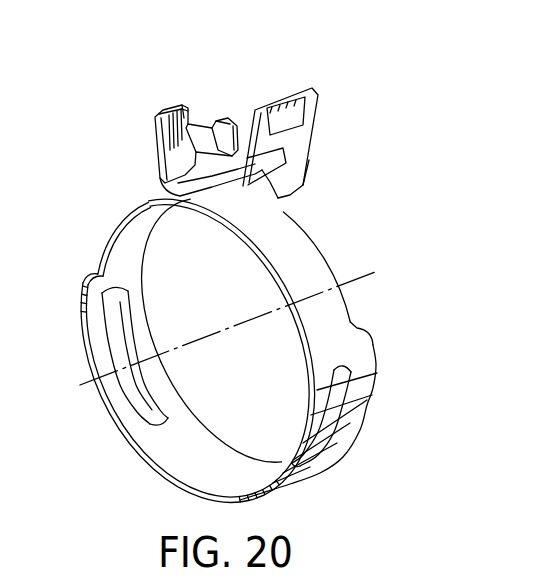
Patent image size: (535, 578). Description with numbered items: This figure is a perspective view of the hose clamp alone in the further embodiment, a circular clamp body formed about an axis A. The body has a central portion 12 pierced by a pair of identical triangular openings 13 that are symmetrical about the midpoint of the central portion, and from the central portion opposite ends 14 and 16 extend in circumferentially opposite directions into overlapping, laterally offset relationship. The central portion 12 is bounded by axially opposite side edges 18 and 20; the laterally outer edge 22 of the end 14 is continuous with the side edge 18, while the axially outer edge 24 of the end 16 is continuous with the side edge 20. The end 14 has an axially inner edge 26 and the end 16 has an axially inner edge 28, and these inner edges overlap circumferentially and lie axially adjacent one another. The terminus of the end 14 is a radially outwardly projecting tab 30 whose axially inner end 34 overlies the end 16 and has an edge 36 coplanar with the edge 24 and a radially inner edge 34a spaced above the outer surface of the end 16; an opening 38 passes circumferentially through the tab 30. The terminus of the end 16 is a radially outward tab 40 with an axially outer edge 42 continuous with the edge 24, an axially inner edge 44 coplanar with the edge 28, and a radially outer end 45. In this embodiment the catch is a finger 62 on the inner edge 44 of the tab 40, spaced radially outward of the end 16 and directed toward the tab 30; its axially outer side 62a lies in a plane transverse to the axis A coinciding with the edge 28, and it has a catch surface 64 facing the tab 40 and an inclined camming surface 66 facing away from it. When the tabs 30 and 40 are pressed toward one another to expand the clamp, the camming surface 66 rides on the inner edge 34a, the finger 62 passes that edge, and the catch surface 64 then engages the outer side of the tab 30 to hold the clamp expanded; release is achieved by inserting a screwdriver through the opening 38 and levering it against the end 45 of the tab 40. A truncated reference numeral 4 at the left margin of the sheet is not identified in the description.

The central portion 12 is at (107, 433).
The triangular openings 13 is at (115, 313).
The end 14 is at (143, 201).
The end 16 is at (340, 293).
The side edge 18 is at (193, 412).
The side edge 20 is at (143, 458).
The laterally outer edge 22 is at (150, 254).
The axially outer edge 24 is at (298, 313).
The axially inner edge 26 is at (130, 230).
The axially inner edge 28 is at (323, 260).
The tab 30 is at (320, 103).
The axially inner end 34 is at (258, 146).
The radially inner edge 34a is at (298, 185).
The edge 36 is at (243, 175).
The opening 38 is at (284, 118).
The tab 40 is at (150, 128).
The axially outer edge 42 is at (160, 157).
The axially inner edge 44 is at (193, 122).
The radially outer end 45 is at (172, 110).
The finger 62 is at (226, 117).
The axially outer side 62a is at (238, 131).
The catch surface 64 is at (163, 110).
The camming surface 66 is at (232, 126).
The axis A is at (226, 327).
The partial numeral 4 is at (4, 262).